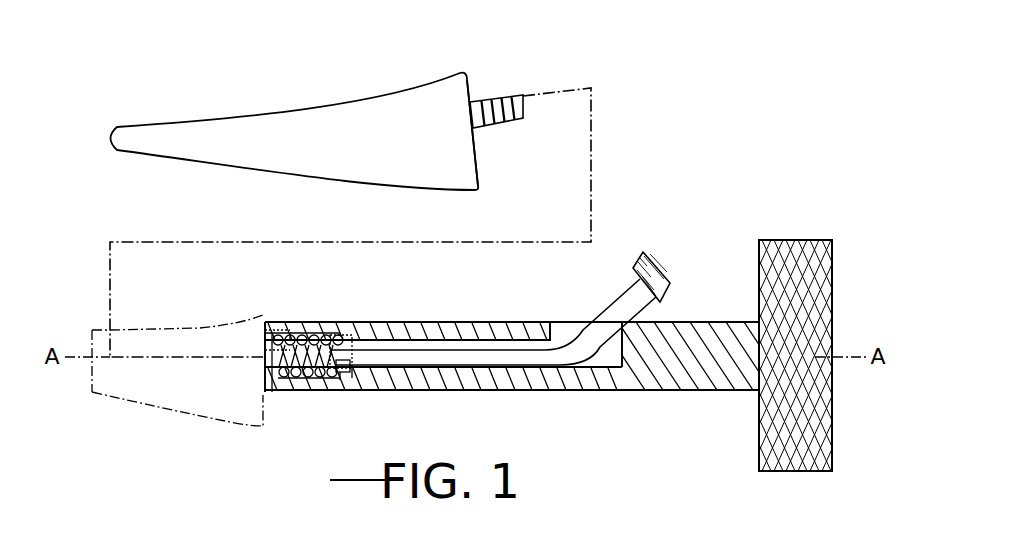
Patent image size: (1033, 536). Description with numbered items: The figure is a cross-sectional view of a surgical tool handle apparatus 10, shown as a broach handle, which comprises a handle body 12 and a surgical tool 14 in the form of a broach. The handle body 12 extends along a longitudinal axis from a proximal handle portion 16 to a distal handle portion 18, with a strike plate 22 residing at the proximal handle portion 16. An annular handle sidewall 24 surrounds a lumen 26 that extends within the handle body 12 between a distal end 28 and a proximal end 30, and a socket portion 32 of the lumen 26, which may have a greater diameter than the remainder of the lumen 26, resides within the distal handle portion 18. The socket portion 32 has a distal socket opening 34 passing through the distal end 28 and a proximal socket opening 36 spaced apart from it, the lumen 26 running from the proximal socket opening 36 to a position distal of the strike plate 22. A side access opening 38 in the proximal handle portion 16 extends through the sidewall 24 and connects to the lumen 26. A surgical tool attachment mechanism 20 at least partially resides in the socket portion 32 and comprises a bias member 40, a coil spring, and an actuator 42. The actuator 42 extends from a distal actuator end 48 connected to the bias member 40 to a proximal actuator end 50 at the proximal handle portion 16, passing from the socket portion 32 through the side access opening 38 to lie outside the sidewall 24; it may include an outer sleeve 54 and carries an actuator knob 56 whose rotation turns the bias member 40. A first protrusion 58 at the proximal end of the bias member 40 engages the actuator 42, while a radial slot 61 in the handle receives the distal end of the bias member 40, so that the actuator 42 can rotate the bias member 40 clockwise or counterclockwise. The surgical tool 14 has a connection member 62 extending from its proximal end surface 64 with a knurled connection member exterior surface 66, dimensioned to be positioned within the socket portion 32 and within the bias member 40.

The surgical tool handle apparatus 10 is at (675, 146).
The handle body 12 is at (484, 330).
The surgical tool 14 is at (378, 127).
The proximal handle portion 16 is at (663, 392).
The distal handle portion 18 is at (315, 389).
The surgical tool attachment mechanism 20 is at (322, 335).
The strike plate 22 is at (808, 452).
The annular handle sidewall 24 is at (533, 386).
The lumen 26 is at (410, 344).
The distal end 28 is at (262, 360).
The proximal end 30 is at (756, 320).
The socket portion 32 is at (277, 383).
The distal socket opening 34 is at (252, 339).
The proximal socket opening 36 is at (366, 390).
The side access opening 38 is at (566, 335).
The bias member 40 is at (293, 325).
The actuator 42 is at (450, 357).
The distal actuator end 48 is at (349, 327).
The proximal actuator end 50 is at (636, 290).
The outer sleeve 54 is at (614, 525).
The actuator knob 56 is at (655, 264).
The first protrusion 58 is at (340, 391).
The radial slot 61 is at (285, 322).
The connection member 62 is at (517, 94).
The proximal end surface 64 is at (480, 152).
The connection member exterior surface 66 is at (498, 91).